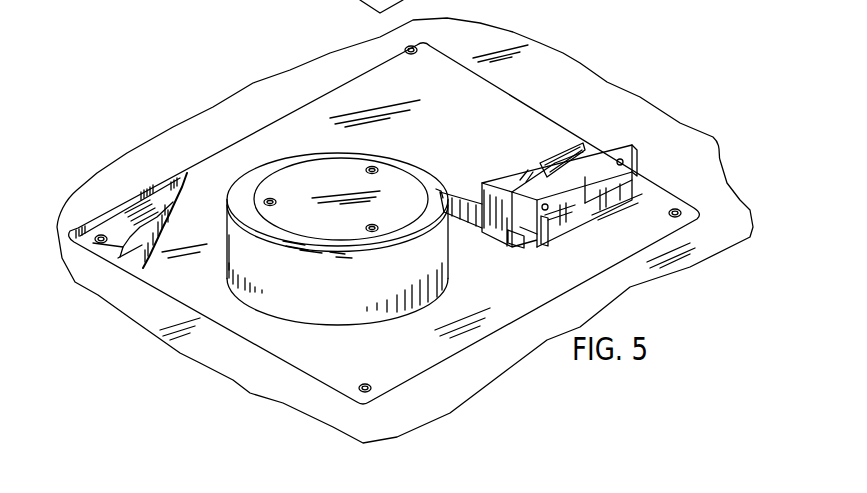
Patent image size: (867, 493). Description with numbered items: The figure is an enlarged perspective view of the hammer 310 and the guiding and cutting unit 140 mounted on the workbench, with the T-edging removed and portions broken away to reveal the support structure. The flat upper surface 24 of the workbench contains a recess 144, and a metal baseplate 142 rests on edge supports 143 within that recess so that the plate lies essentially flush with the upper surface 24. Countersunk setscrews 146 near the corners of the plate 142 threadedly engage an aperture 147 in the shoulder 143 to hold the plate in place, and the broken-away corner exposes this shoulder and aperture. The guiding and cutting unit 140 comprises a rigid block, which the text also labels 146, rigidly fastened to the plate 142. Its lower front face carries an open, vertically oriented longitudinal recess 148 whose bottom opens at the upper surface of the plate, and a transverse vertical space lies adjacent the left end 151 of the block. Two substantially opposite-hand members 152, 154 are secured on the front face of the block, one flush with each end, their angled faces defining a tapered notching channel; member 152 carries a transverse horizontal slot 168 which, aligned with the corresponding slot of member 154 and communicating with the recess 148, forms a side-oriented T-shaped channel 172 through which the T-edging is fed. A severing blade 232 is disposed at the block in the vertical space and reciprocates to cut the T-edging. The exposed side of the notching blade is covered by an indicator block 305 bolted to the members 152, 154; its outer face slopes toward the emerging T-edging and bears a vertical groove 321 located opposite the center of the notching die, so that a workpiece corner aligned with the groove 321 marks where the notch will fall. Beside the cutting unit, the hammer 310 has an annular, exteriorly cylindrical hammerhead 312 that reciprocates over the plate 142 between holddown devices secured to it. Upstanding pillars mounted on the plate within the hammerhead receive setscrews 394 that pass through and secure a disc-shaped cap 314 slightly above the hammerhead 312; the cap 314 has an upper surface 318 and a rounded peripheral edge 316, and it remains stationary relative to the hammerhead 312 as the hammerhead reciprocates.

The upper surface 24 is at (710, 183).
The guiding and cutting unit 140 is at (555, 188).
The metal baseplate 142 is at (490, 106).
The edge supports 143 is at (125, 227).
The recess 144 is at (117, 207).
The countersunk setscrews 146 is at (418, 49).
The aperture 147 is at (101, 244).
The open longitudinal recess 148 is at (513, 238).
The left end 151 is at (492, 225).
The opposite hand member 152 is at (532, 178).
The opposite hand member 154 is at (582, 138).
The transverse horizontal slot 168 is at (525, 242).
The T-shaped channel 172 is at (513, 227).
The severing blade 232 is at (470, 200).
The indicator block 305 is at (620, 135).
The hammer 310 is at (324, 236).
The hammerhead 312 is at (342, 307).
The cap 314 is at (227, 223).
The rounded peripheral edge 316 is at (325, 265).
The upper surface 318 is at (298, 172).
The vertical groove 321 is at (593, 188).
The setscrews 394 is at (265, 198).